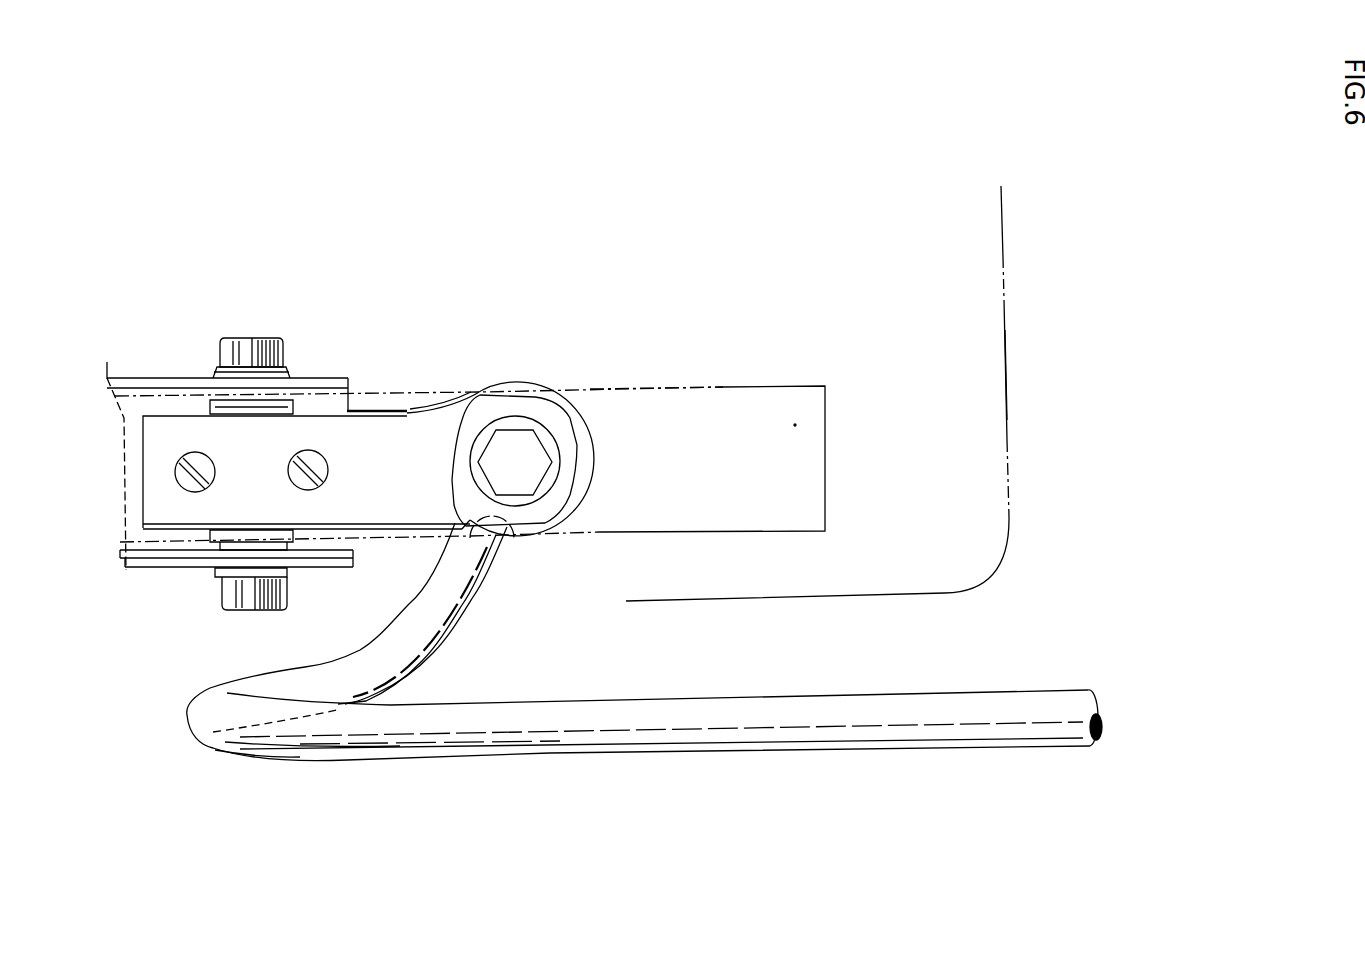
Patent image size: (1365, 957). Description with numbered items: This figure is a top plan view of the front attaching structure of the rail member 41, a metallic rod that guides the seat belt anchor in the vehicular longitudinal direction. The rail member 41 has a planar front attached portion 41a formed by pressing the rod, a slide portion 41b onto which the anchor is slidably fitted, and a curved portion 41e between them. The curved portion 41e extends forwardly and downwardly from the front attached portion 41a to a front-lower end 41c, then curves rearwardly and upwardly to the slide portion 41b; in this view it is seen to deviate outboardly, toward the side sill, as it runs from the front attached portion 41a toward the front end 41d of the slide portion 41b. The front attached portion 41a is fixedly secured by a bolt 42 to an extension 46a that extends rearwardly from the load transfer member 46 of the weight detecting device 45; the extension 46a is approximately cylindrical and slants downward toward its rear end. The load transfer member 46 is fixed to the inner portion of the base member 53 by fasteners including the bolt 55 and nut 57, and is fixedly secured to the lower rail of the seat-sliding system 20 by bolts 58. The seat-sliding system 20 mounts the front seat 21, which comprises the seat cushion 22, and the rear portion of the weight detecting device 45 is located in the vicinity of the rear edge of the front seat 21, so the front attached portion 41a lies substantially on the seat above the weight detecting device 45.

The seat-sliding system 20 is at (780, 385).
The front seat 21 is at (1014, 257).
The seat cushion 22 is at (1007, 371).
The rail member 41 is at (894, 762).
The front attached portion 41a is at (540, 396).
The slide portion 41b is at (797, 707).
The front-lower end 41c is at (198, 700).
The front end 41d is at (425, 733).
The curved portion 41e is at (242, 762).
The bolt 42 is at (528, 451).
The weight detecting device 45 is at (152, 368).
The load transfer member 46 is at (385, 427).
The extension 46a is at (592, 480).
The base member 53 is at (150, 572).
The bolt 55 is at (272, 334).
The nut 57 is at (276, 609).
The bolts 58 is at (211, 459).